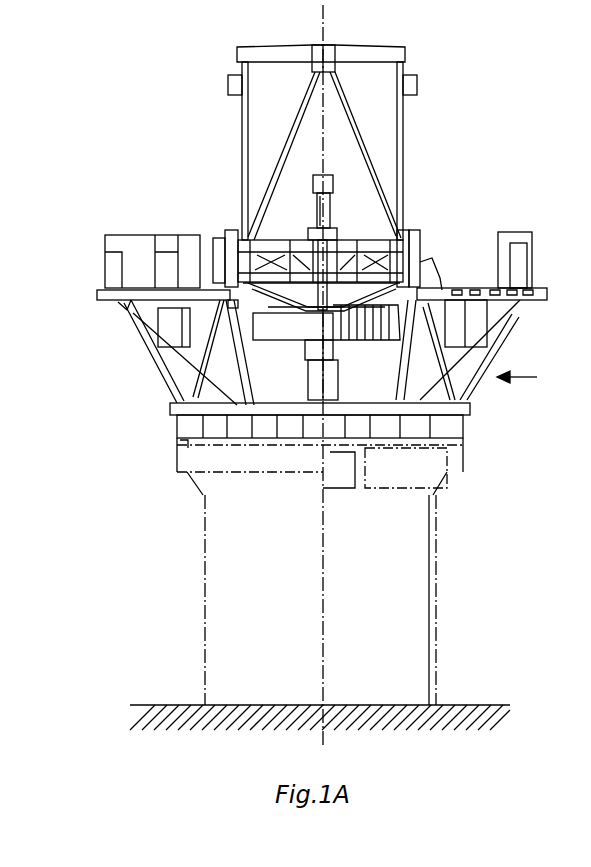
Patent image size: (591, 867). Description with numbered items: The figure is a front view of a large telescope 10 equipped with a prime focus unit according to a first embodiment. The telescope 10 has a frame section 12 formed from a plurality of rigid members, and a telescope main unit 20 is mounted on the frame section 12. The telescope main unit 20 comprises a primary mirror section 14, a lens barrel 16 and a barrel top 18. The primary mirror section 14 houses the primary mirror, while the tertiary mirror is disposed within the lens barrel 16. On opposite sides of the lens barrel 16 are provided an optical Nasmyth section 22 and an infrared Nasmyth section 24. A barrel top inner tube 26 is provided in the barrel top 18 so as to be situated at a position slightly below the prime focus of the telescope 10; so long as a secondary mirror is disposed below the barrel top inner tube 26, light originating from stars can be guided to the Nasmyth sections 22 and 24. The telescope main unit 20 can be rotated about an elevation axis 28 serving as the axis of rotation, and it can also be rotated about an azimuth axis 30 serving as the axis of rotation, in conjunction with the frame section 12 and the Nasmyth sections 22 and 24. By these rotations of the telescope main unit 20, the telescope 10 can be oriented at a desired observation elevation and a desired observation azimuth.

The large telescope 10 is at (118, 226).
The frame section 12 is at (160, 370).
The primary mirror section 14 is at (284, 327).
The lens barrel 16 is at (405, 220).
The barrel top 18 is at (405, 53).
The telescope main unit 20 is at (415, 173).
The optical Nasmyth section 22 is at (97, 292).
The infrared Nasmyth section 24 is at (543, 287).
The barrel top inner tube 26 is at (325, 44).
The elevation axis 28 is at (415, 262).
The azimuth axis 30 is at (323, 570).